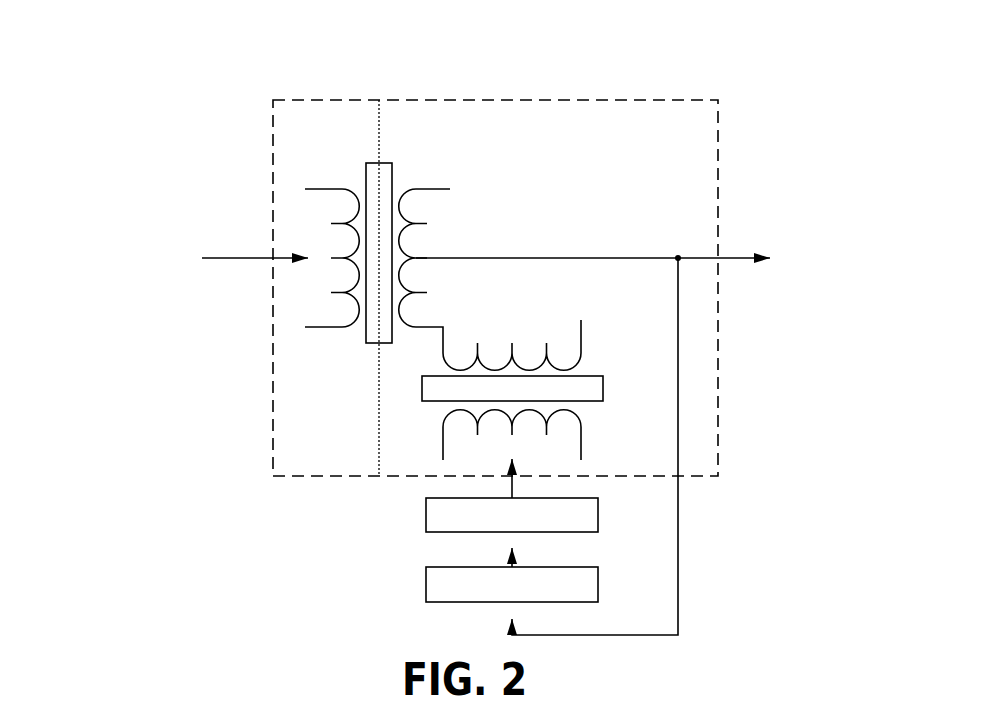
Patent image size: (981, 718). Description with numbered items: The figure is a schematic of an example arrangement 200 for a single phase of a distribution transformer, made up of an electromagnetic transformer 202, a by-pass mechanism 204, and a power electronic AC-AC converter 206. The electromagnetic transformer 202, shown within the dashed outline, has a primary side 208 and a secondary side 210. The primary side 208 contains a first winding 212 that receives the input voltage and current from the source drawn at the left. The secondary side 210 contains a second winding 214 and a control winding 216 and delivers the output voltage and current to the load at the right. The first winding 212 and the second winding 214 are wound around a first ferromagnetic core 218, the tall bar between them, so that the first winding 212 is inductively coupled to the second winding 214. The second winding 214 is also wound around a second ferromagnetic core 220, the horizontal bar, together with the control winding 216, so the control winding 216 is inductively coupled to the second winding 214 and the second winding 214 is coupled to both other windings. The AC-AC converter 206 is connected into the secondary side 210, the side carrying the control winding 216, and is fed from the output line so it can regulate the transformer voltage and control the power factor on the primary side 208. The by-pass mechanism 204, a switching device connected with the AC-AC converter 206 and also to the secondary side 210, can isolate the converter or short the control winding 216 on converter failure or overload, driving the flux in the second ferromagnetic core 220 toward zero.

The arrangement 200 is at (143, 46).
The electromagnetic transformer 202 is at (273, 477).
The by-pass mechanism 204 is at (426, 532).
The power electronic AC-AC converter 206 is at (426, 602).
The primary side 208 is at (320, 128).
The secondary side 210 is at (525, 132).
The first winding 212 is at (343, 329).
The second winding 214 is at (436, 189).
The control winding 216 is at (582, 440).
The first ferromagnetic core 218 is at (366, 345).
The second ferromagnetic core 220 is at (603, 376).